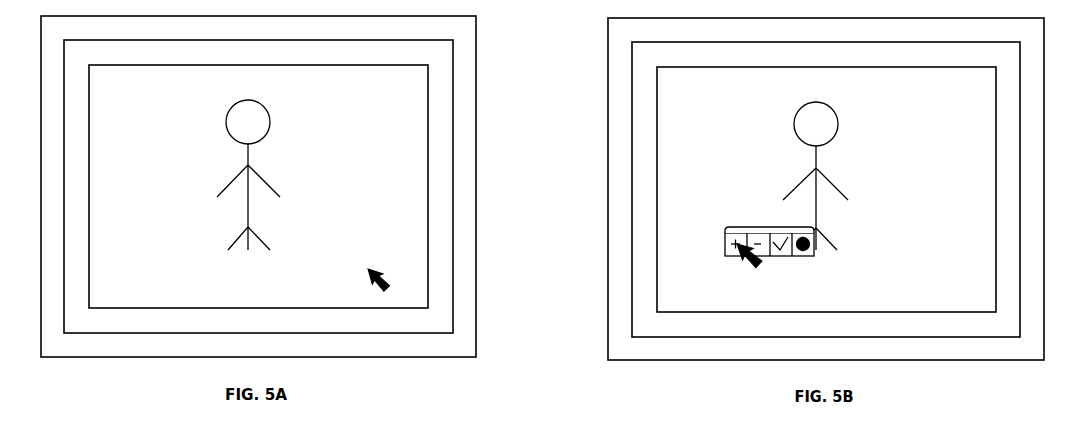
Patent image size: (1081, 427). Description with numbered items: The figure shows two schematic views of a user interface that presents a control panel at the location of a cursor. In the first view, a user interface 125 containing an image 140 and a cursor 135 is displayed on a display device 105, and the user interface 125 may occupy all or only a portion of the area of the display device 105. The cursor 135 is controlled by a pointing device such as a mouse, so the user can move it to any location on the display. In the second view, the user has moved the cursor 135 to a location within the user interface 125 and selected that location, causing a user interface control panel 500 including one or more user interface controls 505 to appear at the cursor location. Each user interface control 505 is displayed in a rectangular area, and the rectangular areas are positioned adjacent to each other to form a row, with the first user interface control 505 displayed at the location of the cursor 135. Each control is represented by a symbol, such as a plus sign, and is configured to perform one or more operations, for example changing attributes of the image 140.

In FIG. 5A, the display device 105 is at (476, 59).
In FIG. 5B, the display device 105 is at (608, 59).
In FIG. 5A, the user interface 125 is at (453, 116).
In FIG. 5B, the user interface 125 is at (632, 116).
In FIG. 5A, the image 140 is at (428, 171).
In FIG. 5B, the image 140 is at (657, 171).
In FIG. 5A, the cursor 135 is at (389, 282).
In FIG. 5B, the cursor 135 is at (735, 252).
In FIG. 5B, the user interface control panel 500 is at (673, 283).
In FIG. 5B, the user interface control 505 is at (673, 218).